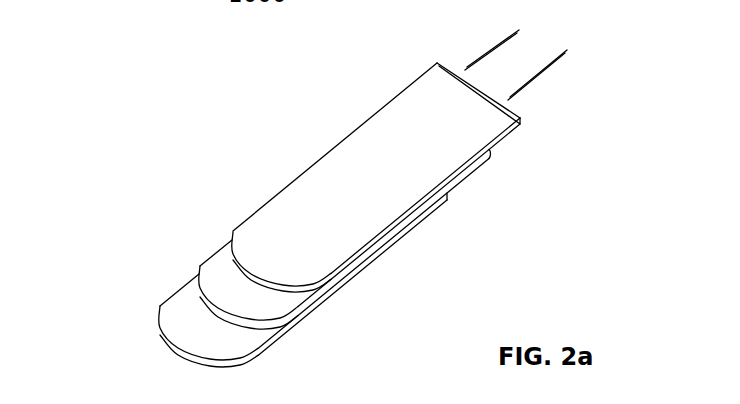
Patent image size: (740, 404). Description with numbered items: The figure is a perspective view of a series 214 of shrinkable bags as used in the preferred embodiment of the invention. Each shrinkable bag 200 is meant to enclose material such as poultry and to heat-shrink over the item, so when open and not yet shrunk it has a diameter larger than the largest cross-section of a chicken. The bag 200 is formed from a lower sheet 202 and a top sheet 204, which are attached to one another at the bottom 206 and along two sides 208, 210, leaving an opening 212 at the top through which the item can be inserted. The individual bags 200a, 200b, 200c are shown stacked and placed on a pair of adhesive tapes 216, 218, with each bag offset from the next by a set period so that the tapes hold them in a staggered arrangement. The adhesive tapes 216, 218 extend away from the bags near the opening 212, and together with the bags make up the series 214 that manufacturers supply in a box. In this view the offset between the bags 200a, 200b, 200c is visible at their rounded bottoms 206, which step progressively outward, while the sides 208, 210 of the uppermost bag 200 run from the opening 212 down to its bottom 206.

The shrinkable bag 200 is at (490, 178).
The bag 200a is at (265, 214).
The bag 200b is at (228, 284).
The bag 200c is at (190, 326).
The lower sheet 202 is at (517, 106).
The top sheet 204 is at (407, 104).
The bottom 206 is at (265, 256).
The side 208 is at (290, 182).
The side 210 is at (443, 190).
The opening 212 is at (483, 92).
The series 214 is at (405, 288).
The adhesive tape 216 is at (505, 35).
The adhesive tape 218 is at (550, 66).